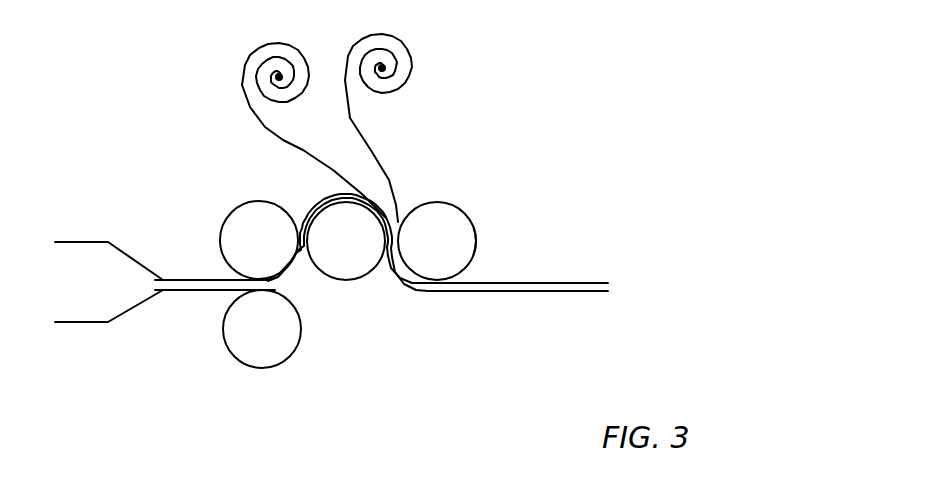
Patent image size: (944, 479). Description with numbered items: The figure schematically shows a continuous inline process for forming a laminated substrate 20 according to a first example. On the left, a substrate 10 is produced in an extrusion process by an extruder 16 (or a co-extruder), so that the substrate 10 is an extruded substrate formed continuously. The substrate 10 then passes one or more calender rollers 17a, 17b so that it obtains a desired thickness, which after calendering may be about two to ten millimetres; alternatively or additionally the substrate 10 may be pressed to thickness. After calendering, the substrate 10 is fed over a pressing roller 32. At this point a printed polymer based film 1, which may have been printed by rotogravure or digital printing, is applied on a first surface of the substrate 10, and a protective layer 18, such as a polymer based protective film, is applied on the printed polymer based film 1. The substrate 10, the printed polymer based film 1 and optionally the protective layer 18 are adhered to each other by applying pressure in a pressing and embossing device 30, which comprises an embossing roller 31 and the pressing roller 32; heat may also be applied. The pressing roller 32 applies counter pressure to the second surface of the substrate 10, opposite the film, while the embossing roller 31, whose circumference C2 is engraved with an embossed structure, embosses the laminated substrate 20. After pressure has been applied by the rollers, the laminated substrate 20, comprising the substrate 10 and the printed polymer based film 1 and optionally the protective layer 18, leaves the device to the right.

The printed polymer based film 1 is at (268, 130).
The protective layer 18 is at (383, 147).
The substrate 10 is at (220, 292).
The extruder 16 is at (98, 320).
The calender roller 17a is at (277, 363).
The calender roller 17b is at (225, 225).
The pressing and embossing device 30 is at (431, 248).
The embossing roller 31 is at (468, 223).
The pressing roller 32 is at (363, 275).
The circumference C2 is at (477, 250).
The laminated substrate 20 is at (565, 296).